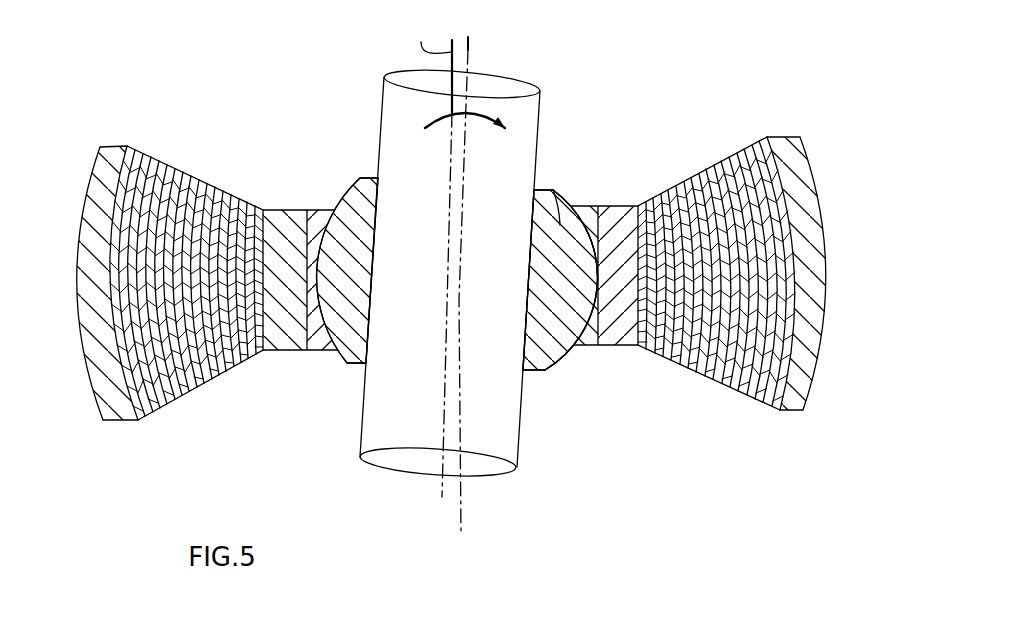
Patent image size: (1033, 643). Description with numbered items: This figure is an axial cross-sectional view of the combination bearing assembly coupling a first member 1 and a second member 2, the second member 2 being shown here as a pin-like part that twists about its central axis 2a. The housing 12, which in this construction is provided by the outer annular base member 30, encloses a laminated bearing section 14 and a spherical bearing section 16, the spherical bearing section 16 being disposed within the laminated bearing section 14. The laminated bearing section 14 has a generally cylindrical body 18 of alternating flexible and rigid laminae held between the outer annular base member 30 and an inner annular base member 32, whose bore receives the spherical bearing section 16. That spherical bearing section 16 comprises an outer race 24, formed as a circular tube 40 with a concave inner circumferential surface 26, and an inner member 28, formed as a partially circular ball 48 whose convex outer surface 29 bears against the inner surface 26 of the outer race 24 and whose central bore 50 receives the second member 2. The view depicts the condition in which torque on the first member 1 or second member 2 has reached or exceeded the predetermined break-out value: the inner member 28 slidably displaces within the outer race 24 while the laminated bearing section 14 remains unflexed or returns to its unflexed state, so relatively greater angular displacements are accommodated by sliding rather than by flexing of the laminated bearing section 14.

The first member 1 is at (820, 218).
The housing 12 is at (716, 295).
The second member 2 is at (535, 129).
The central axis 2a is at (470, 44).
The laminated bearing section 14 is at (202, 150).
The spherical bearing section 16 is at (573, 375).
The generally cylindrical body 18 is at (215, 183).
The outer race 24 is at (316, 347).
The concave inner circumferential surface 26 is at (323, 243).
The inner member 28 is at (355, 193).
The convex outer surface 29 is at (567, 325).
The outer annular base member 30 is at (810, 353).
The inner annular base member 32 is at (617, 217).
The circular tube 40 is at (583, 214).
The partially circular ball 48 is at (535, 364).
The central bore 50 is at (533, 212).